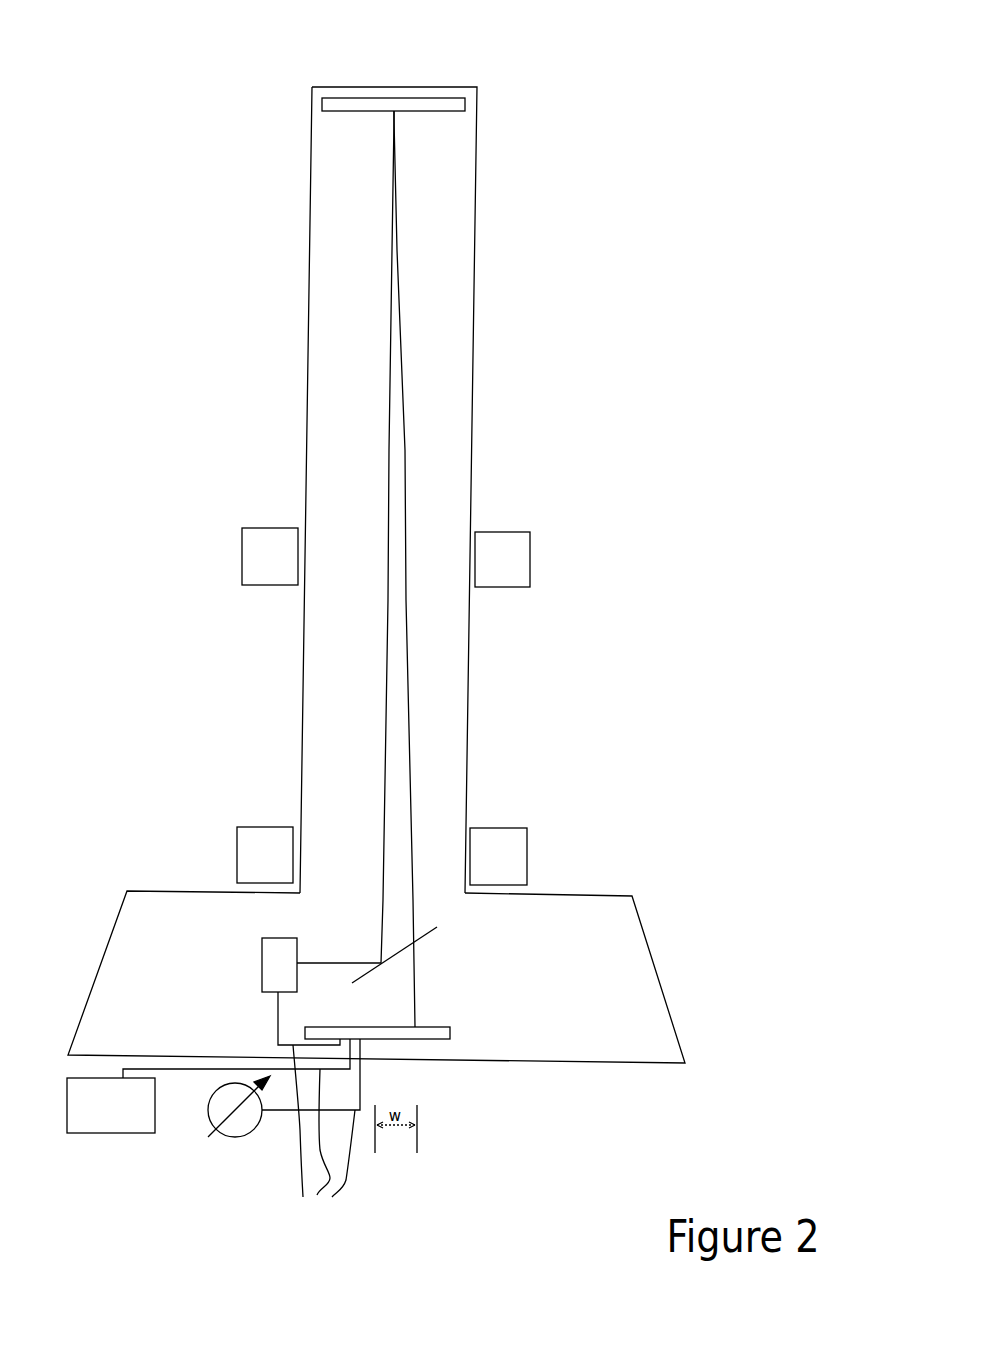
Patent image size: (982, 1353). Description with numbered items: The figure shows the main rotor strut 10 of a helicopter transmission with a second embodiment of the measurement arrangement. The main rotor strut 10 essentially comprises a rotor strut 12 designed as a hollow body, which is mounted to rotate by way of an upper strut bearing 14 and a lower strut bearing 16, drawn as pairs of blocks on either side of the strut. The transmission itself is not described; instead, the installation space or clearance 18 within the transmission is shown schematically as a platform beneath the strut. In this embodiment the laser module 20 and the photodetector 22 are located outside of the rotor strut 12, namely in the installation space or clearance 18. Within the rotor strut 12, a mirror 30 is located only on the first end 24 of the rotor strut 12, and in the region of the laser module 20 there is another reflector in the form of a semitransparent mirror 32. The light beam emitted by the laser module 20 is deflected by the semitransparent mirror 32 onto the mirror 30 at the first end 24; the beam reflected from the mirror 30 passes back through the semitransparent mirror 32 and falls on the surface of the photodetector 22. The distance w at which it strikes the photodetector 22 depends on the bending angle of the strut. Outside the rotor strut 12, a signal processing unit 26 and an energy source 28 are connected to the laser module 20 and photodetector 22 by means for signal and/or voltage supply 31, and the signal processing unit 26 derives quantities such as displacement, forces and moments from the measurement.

The main rotor strut 10 is at (118, 88).
The rotor strut 12 is at (308, 210).
The upper strut bearing 14 is at (498, 530).
The lower strut bearing 16 is at (503, 828).
The installation space or clearance 18 is at (115, 923).
The laser module 20 is at (262, 952).
The photodetector 22 is at (432, 1040).
The first end 24 is at (502, 84).
The signal processing unit 26 is at (92, 1133).
The energy source 28 is at (235, 1137).
The mirror 30 is at (352, 98).
The means for signal and/or voltage supply 31 is at (324, 1140).
The semitransparent mirror 32 is at (430, 937).